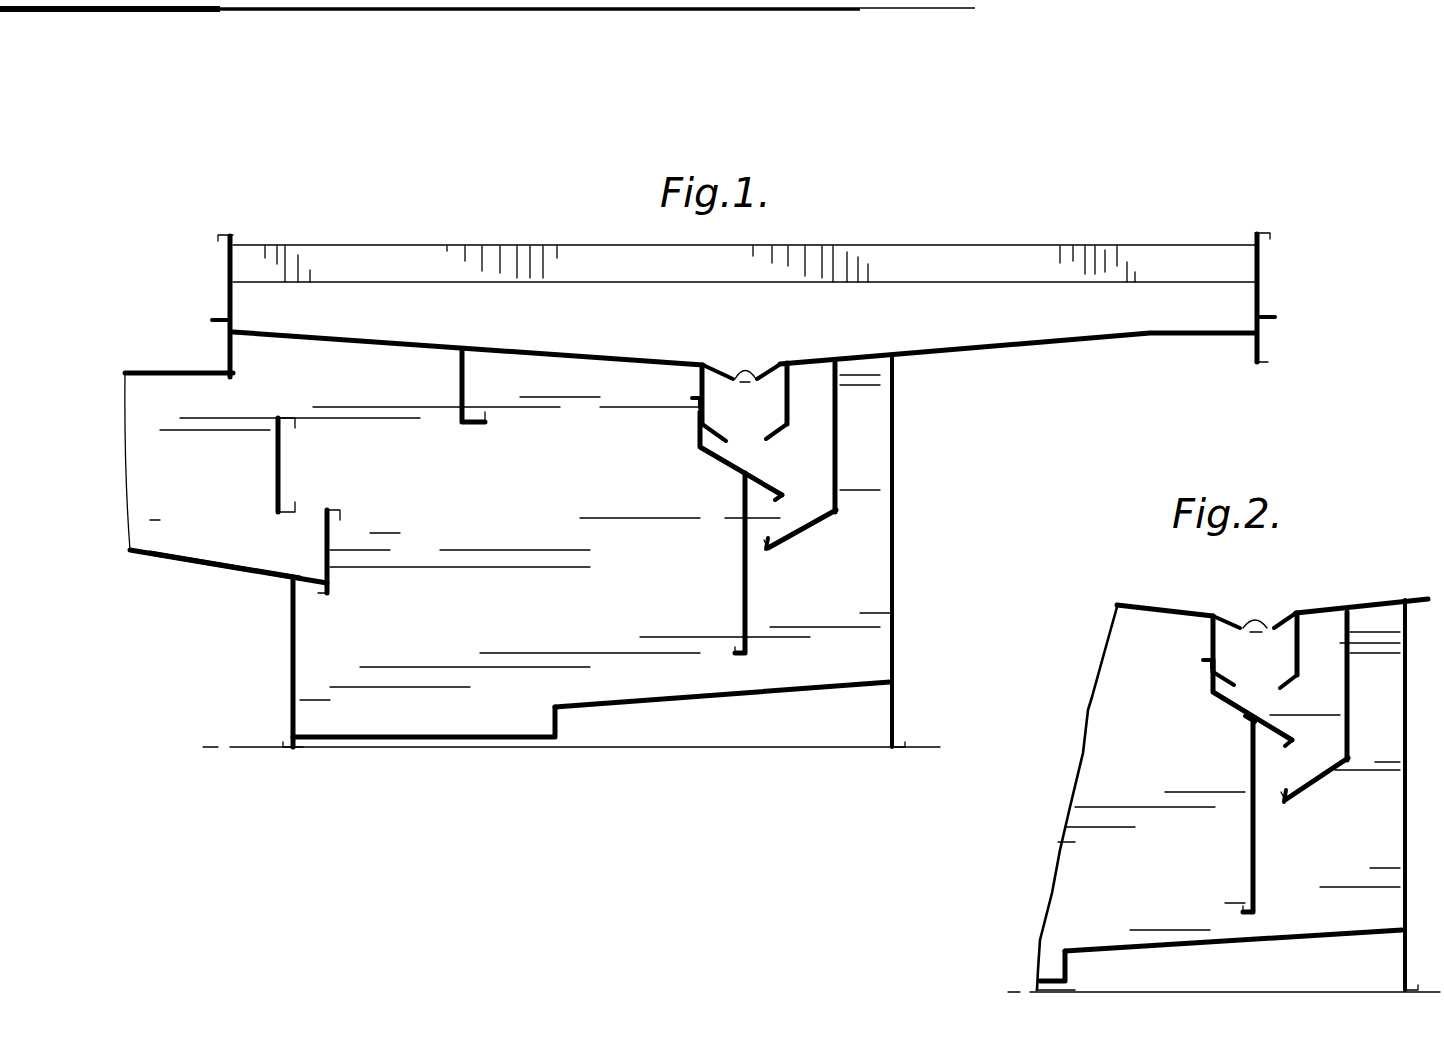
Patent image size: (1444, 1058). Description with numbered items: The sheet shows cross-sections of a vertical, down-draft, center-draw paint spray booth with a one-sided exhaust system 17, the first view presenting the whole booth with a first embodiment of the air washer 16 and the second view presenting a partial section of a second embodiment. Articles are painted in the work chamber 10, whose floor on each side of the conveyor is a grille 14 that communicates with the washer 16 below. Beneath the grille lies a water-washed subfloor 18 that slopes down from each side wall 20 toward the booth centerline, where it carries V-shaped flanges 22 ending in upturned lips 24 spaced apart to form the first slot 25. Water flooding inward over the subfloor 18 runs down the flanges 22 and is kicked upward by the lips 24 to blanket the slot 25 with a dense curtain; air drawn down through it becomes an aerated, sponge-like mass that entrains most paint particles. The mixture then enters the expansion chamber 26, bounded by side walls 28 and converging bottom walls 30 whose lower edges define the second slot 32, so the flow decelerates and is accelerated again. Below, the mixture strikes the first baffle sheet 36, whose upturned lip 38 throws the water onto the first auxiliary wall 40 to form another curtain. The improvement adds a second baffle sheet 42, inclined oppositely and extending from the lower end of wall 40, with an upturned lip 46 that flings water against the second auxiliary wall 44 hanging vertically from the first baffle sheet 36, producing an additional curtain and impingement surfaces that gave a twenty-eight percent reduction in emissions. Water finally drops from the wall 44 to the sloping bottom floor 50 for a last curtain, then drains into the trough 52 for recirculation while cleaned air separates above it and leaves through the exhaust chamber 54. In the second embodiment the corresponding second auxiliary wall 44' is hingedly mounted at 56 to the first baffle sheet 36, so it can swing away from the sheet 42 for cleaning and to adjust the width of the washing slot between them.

In FIG. 1, the work chamber 10 is at (873, 213).
In FIG. 1, the grille 14 is at (422, 257).
In FIG. 1, the air washer 16 is at (688, 482).
In FIG. 1, the one-sided exhaust system 17 is at (215, 567).
In FIG. 1, the subfloor 18 is at (600, 356).
In FIG. 2, the subfloor 18 is at (1155, 604).
In FIG. 1, the side wall 20 is at (228, 300).
In FIG. 1, the V-shaped flanges 22 is at (724, 372).
In FIG. 2, the V-shaped flanges 22 is at (1240, 620).
In FIG. 1, the upturned lips 24 is at (746, 366).
In FIG. 2, the upturned lips 24 is at (1252, 614).
In FIG. 1, the first slot 25 is at (745, 380).
In FIG. 2, the first slot 25 is at (1255, 630).
In FIG. 1, the expansion chamber 26 is at (685, 401).
In FIG. 2, the expansion chamber 26 is at (1195, 661).
In FIG. 1, the side walls 28 is at (698, 386).
In FIG. 2, the side walls 28 is at (1210, 630).
In FIG. 1, the bottom walls 30 is at (735, 438).
In FIG. 2, the bottom walls 30 is at (1244, 680).
In FIG. 1, the second slot 32 is at (760, 438).
In FIG. 2, the second slot 32 is at (1272, 680).
In FIG. 1, the first baffle sheet 36 is at (728, 470).
In FIG. 2, the first baffle sheet 36 is at (1230, 700).
In FIG. 1, the upturned lip 38 is at (800, 482).
In FIG. 2, the upturned lip 38 is at (1300, 722).
In FIG. 1, the first auxiliary wall 40 is at (838, 414).
In FIG. 2, the first auxiliary wall 40 is at (1352, 692).
In FIG. 1, the second baffle sheet 42 is at (808, 528).
In FIG. 2, the second baffle sheet 42 is at (1312, 782).
In FIG. 1, the second auxiliary wall 44 is at (780, 563).
In FIG. 2, the second auxiliary wall 44' is at (1288, 817).
In FIG. 1, the upturned lip 46 is at (772, 540).
In FIG. 2, the upturned lip 46 is at (1287, 785).
In FIG. 1, the sloping bottom floor 50 is at (766, 688).
In FIG. 2, the sloping bottom floor 50 is at (1212, 935).
In FIG. 1, the trough 52 is at (445, 735).
In FIG. 2, the trough 52 is at (1050, 980).
In FIG. 1, the exhaust chamber 54 is at (215, 508).
In FIG. 2, the hinge mount 56 is at (1245, 722).